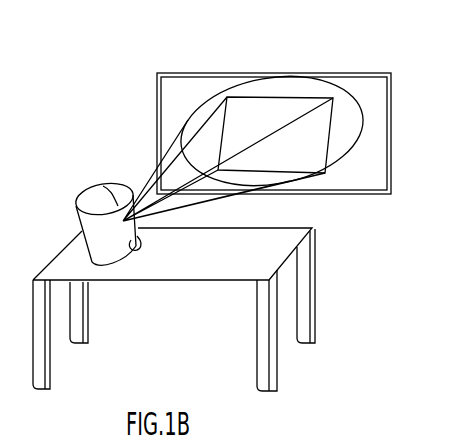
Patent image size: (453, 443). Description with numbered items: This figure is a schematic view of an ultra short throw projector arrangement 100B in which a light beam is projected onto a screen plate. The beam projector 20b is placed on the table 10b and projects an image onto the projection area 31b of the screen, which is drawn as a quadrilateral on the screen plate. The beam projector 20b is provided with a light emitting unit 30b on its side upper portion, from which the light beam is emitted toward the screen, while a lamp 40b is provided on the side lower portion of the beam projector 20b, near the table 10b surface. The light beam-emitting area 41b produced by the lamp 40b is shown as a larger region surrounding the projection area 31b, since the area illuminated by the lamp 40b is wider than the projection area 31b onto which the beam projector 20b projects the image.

The projection system 100B is at (408, 52).
The table 10b is at (66, 261).
The beam projector 20b is at (78, 226).
The light emitting unit 30b is at (103, 186).
The lamp 40b is at (143, 244).
The projection area 31b is at (314, 148).
The light beam-emitting area 41b is at (336, 94).